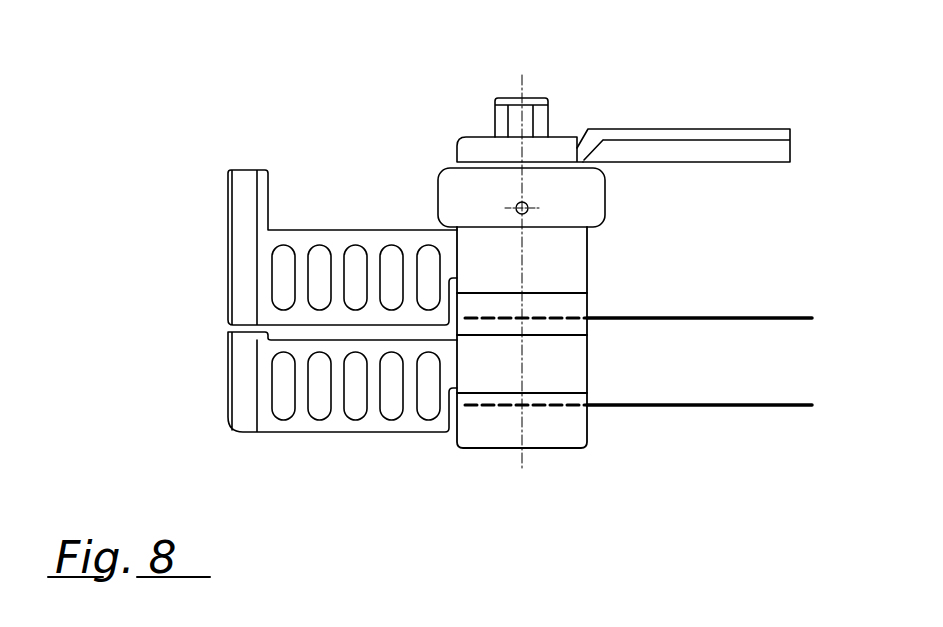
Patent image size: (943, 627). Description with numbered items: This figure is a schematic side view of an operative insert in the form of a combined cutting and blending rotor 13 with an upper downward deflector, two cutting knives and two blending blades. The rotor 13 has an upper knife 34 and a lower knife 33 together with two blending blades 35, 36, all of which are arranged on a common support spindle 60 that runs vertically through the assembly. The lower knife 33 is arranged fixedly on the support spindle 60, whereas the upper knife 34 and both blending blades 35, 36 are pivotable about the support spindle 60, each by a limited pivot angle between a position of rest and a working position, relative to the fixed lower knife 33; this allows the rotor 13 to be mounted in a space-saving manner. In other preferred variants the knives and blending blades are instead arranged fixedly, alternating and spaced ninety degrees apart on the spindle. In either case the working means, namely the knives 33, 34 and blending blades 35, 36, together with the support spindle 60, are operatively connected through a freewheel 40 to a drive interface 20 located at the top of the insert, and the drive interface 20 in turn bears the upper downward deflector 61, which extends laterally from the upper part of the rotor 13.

The cutting rotor 13 is at (250, 78).
The drive interface 20 is at (477, 122).
The freewheel 40 is at (410, 143).
The upper downward deflector 61 is at (710, 145).
The support spindle 60 is at (552, 455).
The upper knife 34 is at (693, 308).
The lower knife 33 is at (660, 393).
The blending blade 36 is at (207, 268).
The blending blade 35 is at (213, 392).